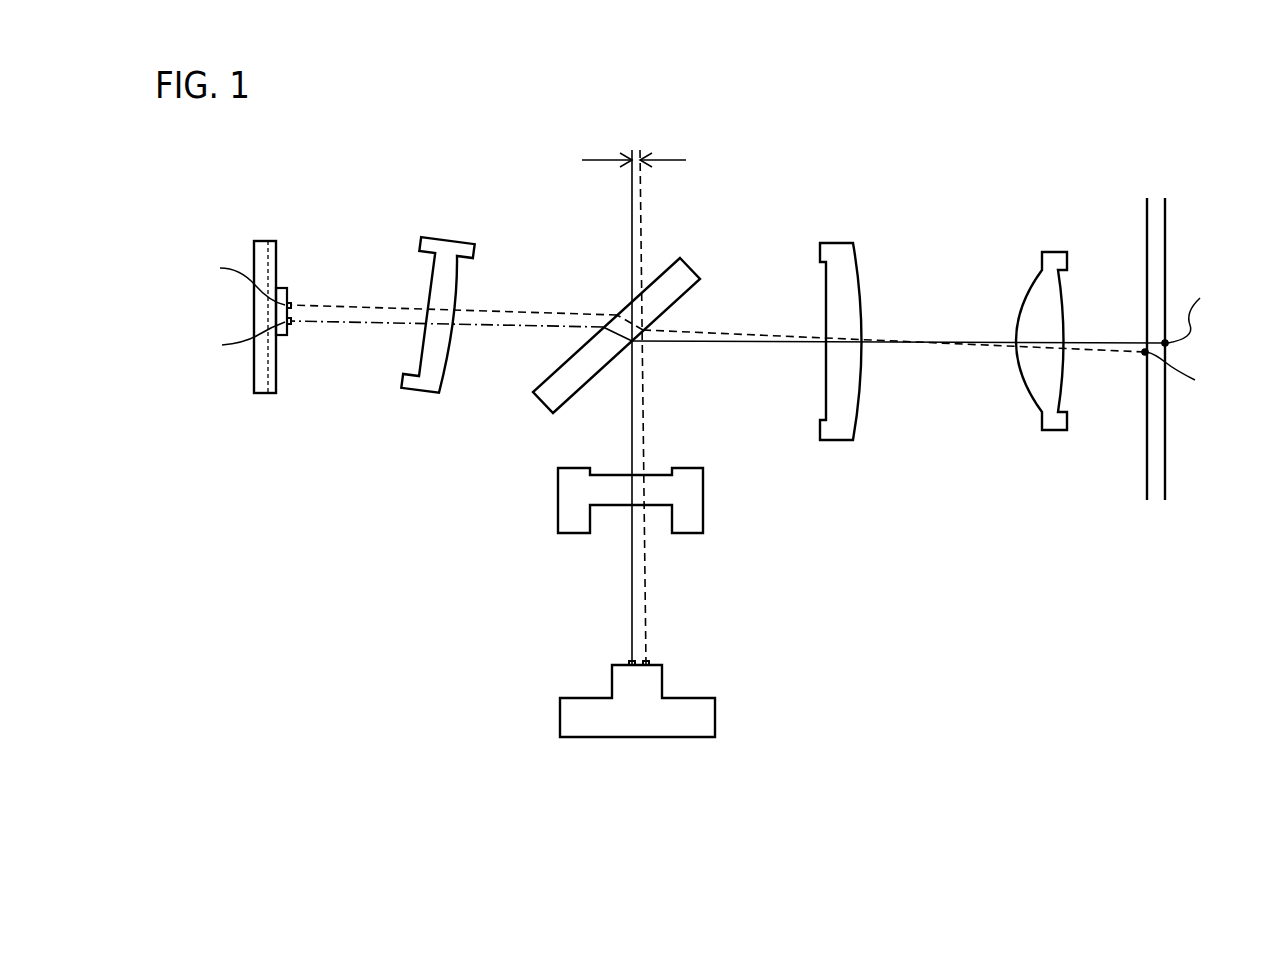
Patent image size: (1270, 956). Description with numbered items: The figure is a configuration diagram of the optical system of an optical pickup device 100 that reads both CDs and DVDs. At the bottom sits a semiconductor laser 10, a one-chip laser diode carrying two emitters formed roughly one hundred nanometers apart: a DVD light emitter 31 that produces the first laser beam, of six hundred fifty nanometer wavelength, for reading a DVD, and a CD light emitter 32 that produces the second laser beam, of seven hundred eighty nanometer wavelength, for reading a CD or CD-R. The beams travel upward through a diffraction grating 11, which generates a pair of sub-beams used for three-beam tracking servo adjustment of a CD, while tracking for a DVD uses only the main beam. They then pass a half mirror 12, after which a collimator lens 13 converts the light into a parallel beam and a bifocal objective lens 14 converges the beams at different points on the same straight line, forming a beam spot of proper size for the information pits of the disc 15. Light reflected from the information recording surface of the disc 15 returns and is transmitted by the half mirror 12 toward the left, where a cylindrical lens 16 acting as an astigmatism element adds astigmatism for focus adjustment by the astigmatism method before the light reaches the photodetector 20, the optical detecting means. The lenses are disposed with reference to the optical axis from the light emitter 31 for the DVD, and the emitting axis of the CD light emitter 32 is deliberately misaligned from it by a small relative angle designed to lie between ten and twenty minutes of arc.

The optical pickup device 100 is at (800, 118).
The semiconductor laser 10 is at (707, 718).
The diffraction grating 11 is at (693, 492).
The half mirror 12 is at (683, 273).
The collimator lens 13 is at (840, 260).
The bifocal objective lens 14 is at (1027, 313).
The disc 15 is at (1155, 193).
The cylindrical lens 16 is at (455, 252).
The photodetector 20 is at (262, 396).
The 650 nm light emitter 31 is at (630, 663).
The 780 nm light emitter 32 is at (650, 662).